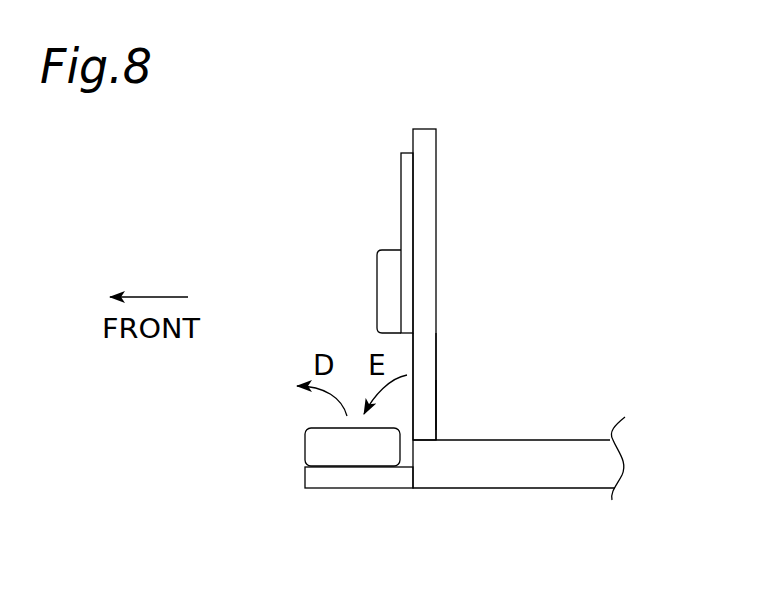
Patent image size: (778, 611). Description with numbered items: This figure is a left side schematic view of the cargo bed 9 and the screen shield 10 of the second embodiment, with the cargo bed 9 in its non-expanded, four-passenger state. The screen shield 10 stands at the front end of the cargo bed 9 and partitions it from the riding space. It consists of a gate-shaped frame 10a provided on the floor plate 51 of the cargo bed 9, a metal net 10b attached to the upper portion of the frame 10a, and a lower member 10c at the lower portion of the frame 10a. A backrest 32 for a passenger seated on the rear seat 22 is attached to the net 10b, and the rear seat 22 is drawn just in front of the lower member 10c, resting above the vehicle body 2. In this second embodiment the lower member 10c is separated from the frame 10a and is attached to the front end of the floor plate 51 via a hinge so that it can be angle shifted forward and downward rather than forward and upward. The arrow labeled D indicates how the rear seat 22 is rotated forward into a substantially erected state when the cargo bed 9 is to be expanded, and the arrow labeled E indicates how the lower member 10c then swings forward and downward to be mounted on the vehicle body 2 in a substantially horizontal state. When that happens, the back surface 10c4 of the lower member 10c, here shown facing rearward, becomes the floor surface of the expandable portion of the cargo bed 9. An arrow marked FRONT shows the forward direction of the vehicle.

The screen shield 10 is at (454, 90).
The frame 10a is at (424, 164).
The metal net 10b is at (407, 183).
The lower member 10c is at (424, 370).
The back surface 10c4 is at (436, 402).
The backrest 32 is at (388, 292).
The rear seat 22 is at (291, 418).
The vehicle body 2 is at (361, 476).
The floor plate 51 is at (537, 470).
The cargo bed 9 is at (598, 396).